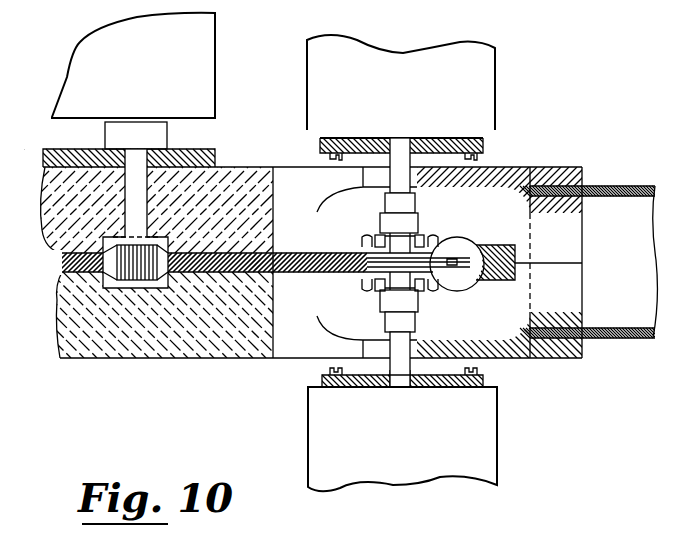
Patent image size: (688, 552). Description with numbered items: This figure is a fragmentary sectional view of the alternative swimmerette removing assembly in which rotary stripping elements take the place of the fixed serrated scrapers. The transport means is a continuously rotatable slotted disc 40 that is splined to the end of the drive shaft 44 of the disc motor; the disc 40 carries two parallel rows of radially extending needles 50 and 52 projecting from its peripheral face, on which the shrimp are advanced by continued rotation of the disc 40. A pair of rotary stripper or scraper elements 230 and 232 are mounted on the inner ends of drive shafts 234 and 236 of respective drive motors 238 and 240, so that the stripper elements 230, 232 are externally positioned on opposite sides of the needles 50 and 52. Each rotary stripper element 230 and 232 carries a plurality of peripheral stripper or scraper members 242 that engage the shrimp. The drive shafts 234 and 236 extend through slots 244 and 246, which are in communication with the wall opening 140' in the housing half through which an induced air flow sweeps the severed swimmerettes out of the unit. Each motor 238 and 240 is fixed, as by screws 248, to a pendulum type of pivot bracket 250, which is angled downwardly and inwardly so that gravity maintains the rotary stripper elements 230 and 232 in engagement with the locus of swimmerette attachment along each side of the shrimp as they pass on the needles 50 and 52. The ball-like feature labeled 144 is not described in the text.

The slotted disc 40 is at (342, 249).
The drive shaft 44 is at (133, 168).
The needle 50 is at (477, 246).
The needle 52 is at (452, 283).
The wall opening 140' is at (208, 279).
The ball 144 is at (462, 245).
The rotary stripper element 230 is at (366, 239).
The rotary stripper element 232 is at (366, 284).
The drive shaft 234 is at (403, 148).
The drive shaft 236 is at (403, 374).
The drive motor 238 is at (422, 91).
The drive motor 240 is at (422, 462).
The peripheral stripper 242 is at (430, 236).
The slot 244 is at (374, 181).
The slot 246 is at (383, 348).
The screw 248 is at (486, 158).
The pivot bracket 250 is at (453, 146).